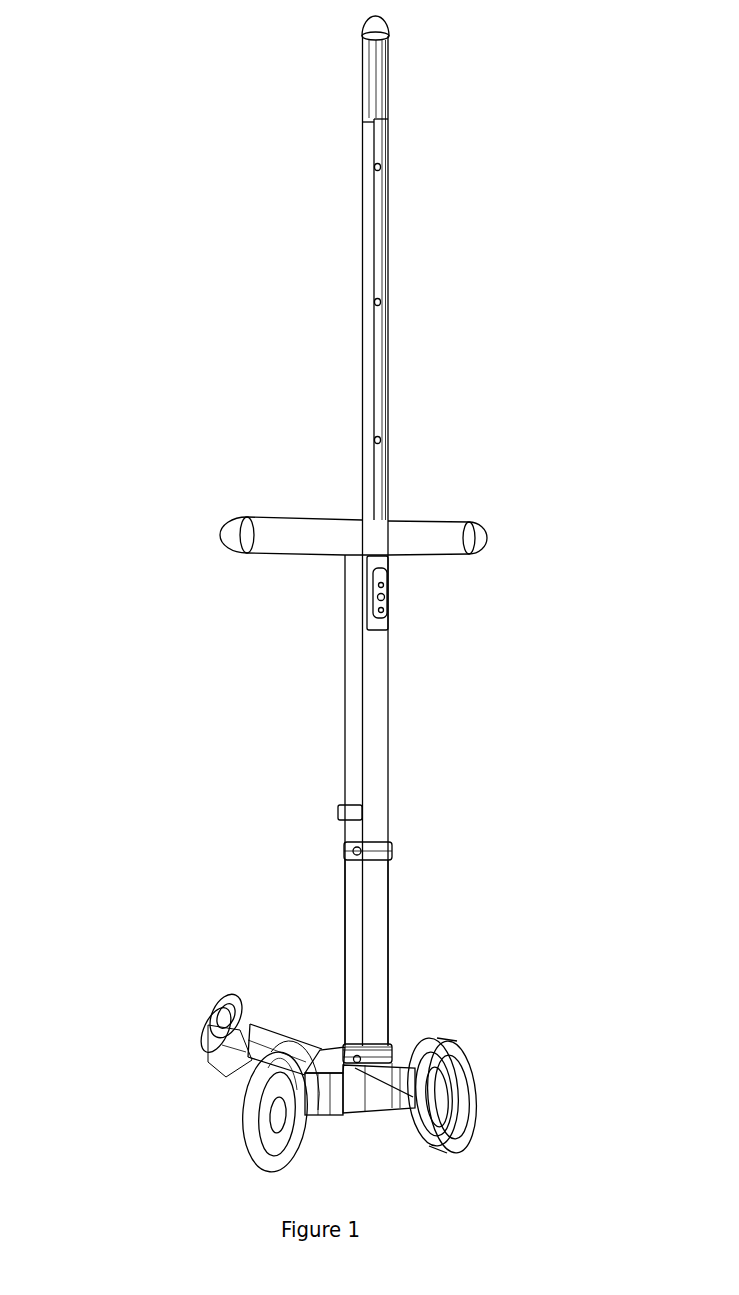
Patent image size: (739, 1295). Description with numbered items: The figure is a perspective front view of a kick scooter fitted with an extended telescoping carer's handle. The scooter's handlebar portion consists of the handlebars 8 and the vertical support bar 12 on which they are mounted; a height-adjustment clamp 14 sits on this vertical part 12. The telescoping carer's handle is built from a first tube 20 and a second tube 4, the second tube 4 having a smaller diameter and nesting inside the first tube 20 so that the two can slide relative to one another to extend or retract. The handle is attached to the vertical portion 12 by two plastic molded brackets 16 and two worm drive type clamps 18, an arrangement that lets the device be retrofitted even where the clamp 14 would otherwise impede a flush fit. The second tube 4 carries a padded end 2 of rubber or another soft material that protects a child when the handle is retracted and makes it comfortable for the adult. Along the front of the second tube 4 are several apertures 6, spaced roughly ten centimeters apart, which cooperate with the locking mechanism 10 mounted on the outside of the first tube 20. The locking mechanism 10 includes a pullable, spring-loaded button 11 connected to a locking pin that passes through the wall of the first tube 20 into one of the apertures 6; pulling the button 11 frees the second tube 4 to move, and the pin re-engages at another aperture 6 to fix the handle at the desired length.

The padded end 2 is at (353, 23).
The second tube 4 is at (347, 208).
The apertures 6 is at (389, 165).
The handlebars 8 is at (200, 530).
The locking mechanism 10 is at (388, 622).
The button 11 is at (392, 593).
The vertical support bar 12 is at (337, 705).
The clamp 14 is at (338, 813).
The brackets 16 is at (348, 1042).
The worm drive type clamps 18 is at (392, 851).
The first tube 20 is at (368, 1018).